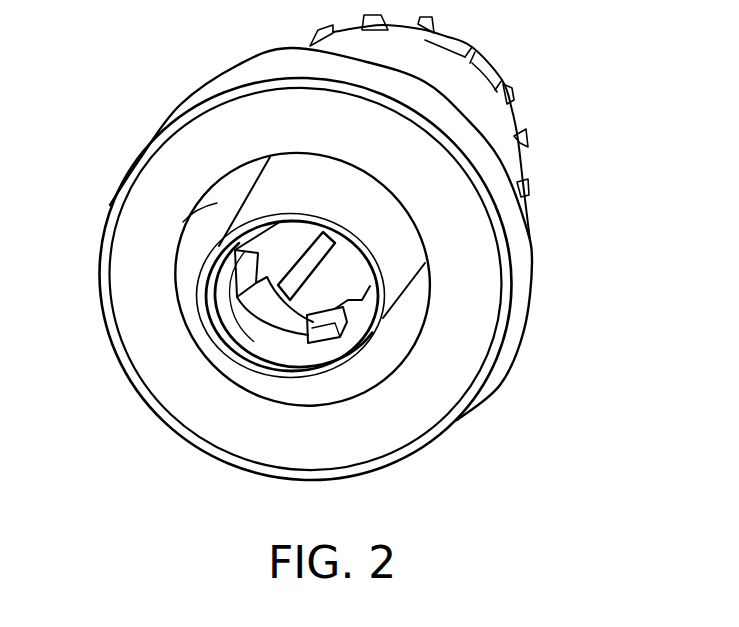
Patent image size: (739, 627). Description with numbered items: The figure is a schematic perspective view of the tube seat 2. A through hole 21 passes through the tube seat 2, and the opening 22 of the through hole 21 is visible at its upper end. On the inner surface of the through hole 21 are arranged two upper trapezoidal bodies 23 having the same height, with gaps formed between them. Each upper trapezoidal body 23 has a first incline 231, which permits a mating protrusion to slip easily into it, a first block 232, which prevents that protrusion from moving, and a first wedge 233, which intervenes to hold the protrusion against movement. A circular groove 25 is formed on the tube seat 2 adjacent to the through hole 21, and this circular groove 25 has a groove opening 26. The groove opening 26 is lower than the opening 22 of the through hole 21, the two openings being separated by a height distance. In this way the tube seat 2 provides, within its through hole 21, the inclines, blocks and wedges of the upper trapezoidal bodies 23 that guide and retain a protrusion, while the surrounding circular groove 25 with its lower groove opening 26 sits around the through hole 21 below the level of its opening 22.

The tube seat 2 is at (520, 232).
The through hole 21 is at (272, 335).
The opening 22 is at (230, 327).
The upper trapezoidal body 23 is at (272, 303).
The first incline 231 is at (338, 317).
The first block 232 is at (240, 272).
The first wedge 233 is at (323, 342).
The circular groove 25 is at (222, 209).
The groove opening 26 is at (175, 282).